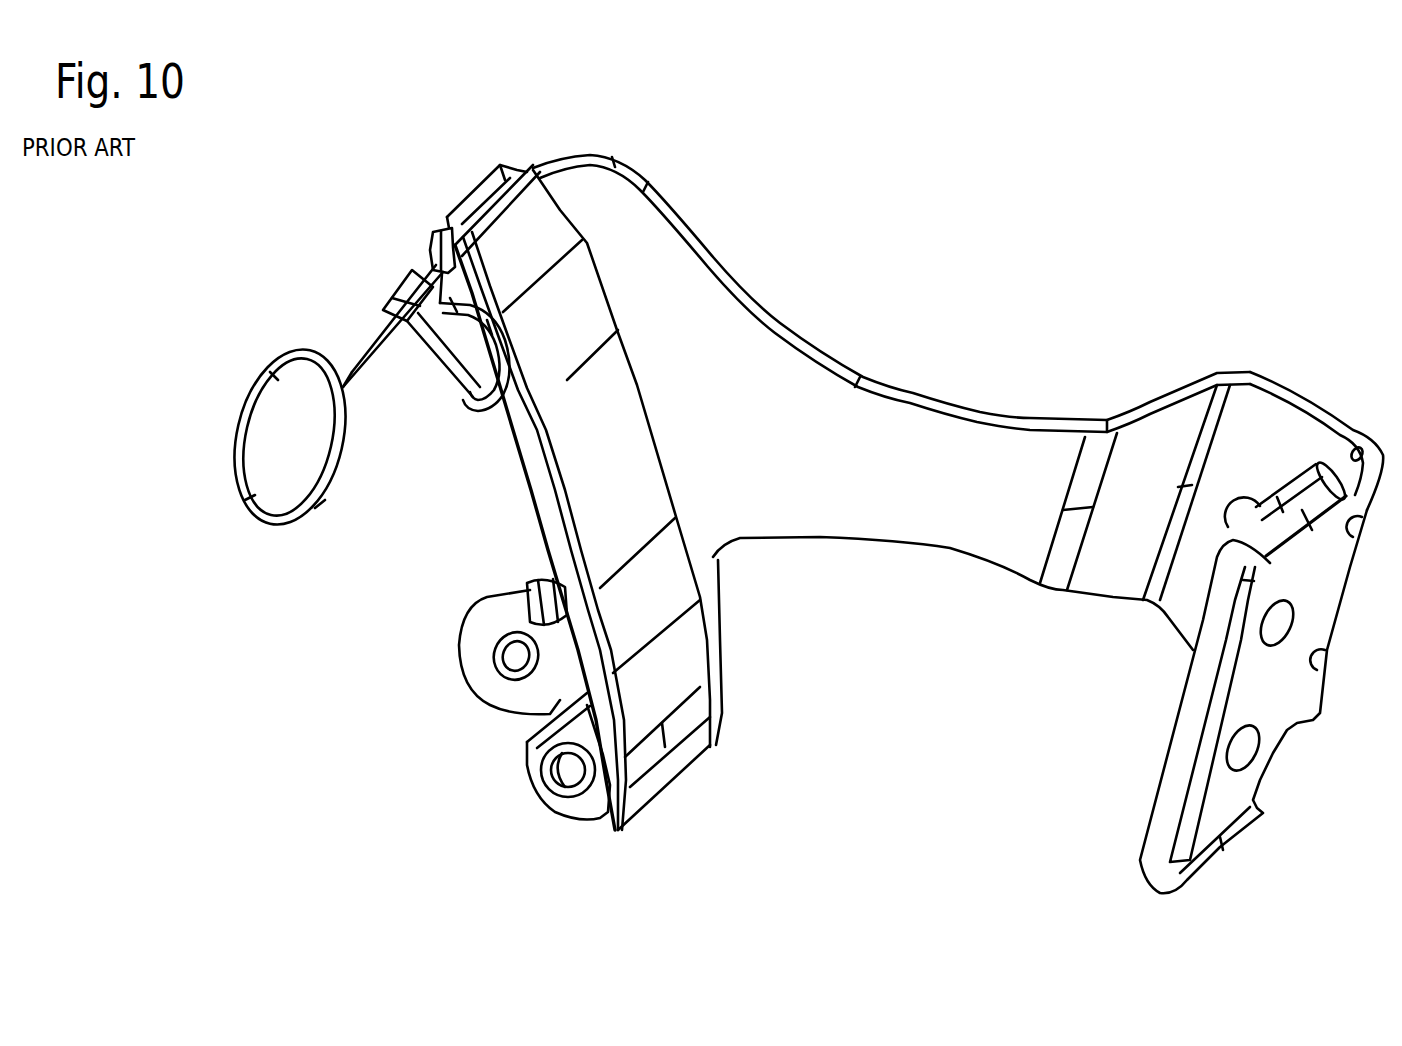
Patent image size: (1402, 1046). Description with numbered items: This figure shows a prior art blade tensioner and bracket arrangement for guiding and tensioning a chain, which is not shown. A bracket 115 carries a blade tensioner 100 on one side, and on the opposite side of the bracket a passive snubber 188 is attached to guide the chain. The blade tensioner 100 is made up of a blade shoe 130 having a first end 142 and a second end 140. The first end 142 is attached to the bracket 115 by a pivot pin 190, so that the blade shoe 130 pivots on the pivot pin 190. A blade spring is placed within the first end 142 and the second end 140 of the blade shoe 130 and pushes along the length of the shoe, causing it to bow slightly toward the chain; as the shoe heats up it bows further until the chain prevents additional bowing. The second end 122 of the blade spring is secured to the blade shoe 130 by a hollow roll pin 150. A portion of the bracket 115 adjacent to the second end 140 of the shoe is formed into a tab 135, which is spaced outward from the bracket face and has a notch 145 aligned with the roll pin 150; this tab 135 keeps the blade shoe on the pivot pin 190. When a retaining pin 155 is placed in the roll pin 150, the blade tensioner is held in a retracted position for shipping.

The blade tensioner 100 is at (540, 520).
The bracket 115 is at (863, 422).
The second end of the blade spring 122 is at (483, 180).
The blade shoe 130 is at (557, 547).
The tab 135 is at (487, 387).
The second end of the blade shoe 140 is at (540, 158).
The first end of the blade shoe 142 is at (674, 788).
The notch 145 is at (407, 290).
The hollow roll pin 150 is at (430, 255).
The retaining pin 155 is at (333, 472).
The passive snubber 188 is at (1150, 872).
The pivot pin 190 is at (568, 780).